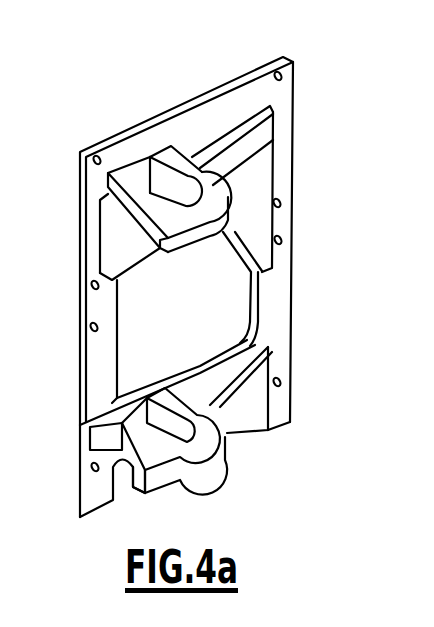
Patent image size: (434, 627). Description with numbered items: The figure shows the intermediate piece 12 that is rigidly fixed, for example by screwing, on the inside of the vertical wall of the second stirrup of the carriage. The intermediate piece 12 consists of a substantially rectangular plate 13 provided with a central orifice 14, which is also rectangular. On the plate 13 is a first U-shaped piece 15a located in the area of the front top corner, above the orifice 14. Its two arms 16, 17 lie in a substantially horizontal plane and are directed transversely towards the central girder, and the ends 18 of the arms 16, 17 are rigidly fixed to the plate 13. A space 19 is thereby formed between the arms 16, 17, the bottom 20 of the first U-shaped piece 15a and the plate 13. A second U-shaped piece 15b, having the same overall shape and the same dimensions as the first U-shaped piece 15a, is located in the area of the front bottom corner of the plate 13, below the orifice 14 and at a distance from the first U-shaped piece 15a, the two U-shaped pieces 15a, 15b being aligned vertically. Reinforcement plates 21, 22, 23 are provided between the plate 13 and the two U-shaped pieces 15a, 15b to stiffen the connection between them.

The intermediate piece 12 is at (134, 100).
The plate 13 is at (280, 95).
The central orifice 14 is at (222, 303).
The first U-shaped piece 15a is at (236, 210).
The second U-shaped piece 15b is at (228, 483).
The arm 16 is at (192, 165).
The arm 17 is at (110, 196).
The ends of the arms 18 is at (162, 150).
The space 19 is at (177, 188).
The bottom of the first U-shaped piece 20 is at (255, 296).
The reinforcement plate 21 is at (243, 172).
The reinforcement plate 22 is at (113, 240).
The reinforcement plate 23 is at (248, 393).